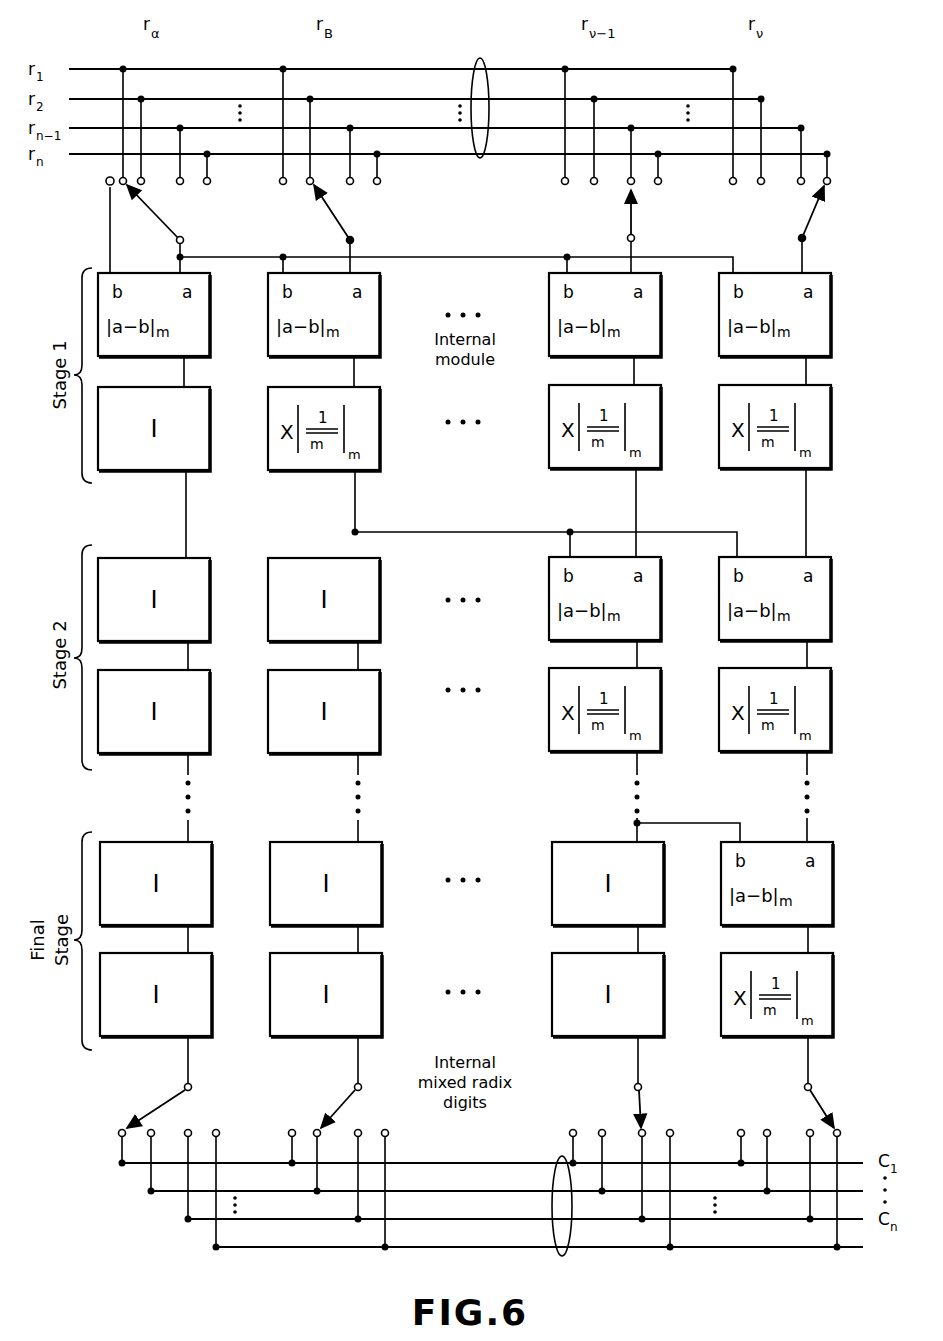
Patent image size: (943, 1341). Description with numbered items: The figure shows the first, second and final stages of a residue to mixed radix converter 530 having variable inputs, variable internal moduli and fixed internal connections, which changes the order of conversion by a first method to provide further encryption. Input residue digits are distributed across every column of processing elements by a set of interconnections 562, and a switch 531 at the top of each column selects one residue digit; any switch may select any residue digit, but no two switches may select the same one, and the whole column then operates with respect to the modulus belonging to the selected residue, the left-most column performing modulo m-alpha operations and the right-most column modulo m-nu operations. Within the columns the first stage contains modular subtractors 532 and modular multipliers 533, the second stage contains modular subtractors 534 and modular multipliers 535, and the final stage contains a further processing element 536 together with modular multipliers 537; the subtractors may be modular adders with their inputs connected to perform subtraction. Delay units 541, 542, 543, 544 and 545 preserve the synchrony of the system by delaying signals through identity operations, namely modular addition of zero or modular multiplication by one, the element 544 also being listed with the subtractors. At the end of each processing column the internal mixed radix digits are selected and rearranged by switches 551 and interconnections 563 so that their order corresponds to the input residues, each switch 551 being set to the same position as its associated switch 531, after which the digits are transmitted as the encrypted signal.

The residue to mixed radix converter 530 is at (650, 1250).
The switches 531 is at (509, 229).
The modular subtractors 532 is at (464, 333).
The modular multipliers 533 is at (549, 445).
The modular subtractors 534 is at (685, 611).
The modular multipliers 535 is at (685, 725).
The modular subtractor final stage 536 is at (819, 884).
The modular multipliers 537 is at (819, 995).
The delay unit 541 is at (154, 447).
The delay unit 542 is at (239, 614).
The delay unit 543 is at (239, 726).
The modular subtractor 544 is at (382, 883).
The delay unit 545 is at (382, 997).
The switches 551 is at (488, 1095).
The interconnections 562 is at (480, 58).
The interconnections 563 is at (564, 1256).